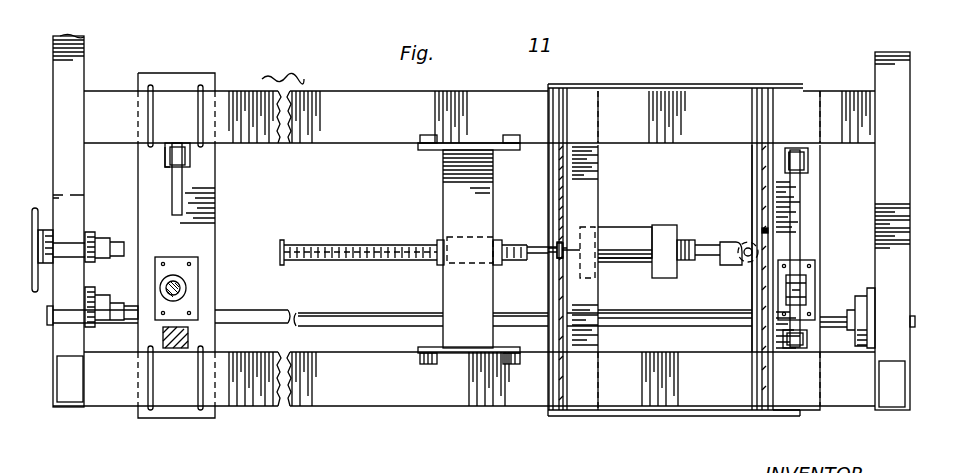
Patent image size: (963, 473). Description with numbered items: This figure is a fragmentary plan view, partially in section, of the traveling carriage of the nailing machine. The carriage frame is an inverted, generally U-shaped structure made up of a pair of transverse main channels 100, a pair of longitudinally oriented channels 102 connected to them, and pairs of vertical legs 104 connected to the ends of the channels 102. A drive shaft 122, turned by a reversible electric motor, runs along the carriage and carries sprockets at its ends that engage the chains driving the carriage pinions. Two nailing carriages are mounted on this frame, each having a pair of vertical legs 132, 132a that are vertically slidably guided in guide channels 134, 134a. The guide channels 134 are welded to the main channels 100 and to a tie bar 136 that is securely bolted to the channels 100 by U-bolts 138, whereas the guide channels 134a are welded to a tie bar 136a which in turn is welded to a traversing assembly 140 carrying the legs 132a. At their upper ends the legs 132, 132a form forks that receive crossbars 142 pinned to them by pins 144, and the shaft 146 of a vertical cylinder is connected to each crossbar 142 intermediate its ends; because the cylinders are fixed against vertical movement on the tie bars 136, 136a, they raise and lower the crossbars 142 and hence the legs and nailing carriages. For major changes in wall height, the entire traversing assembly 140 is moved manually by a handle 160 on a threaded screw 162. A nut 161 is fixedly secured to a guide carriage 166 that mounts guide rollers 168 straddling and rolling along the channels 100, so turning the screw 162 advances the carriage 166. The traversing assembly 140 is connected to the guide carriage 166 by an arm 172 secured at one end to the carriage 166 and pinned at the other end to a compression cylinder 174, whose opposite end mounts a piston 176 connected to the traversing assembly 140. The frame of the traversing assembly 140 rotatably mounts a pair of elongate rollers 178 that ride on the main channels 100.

The transverse main channels 100 is at (365, 107).
The longitudinally oriented channels 102 is at (74, 77).
The vertical legs 104 is at (72, 390).
The drive shaft 122 is at (388, 320).
The vertical legs 132 is at (190, 160).
The vertical legs 132a is at (805, 167).
The guide channels 134 is at (164, 166).
The guide channels 134a is at (808, 153).
The tie bar 136 is at (217, 222).
The tie bar 136a is at (815, 202).
The U-bolts 138 is at (188, 102).
The traversing assembly 140 is at (707, 75).
The crossbars 142 is at (182, 193).
The pins 144 is at (807, 340).
The shaft 146 is at (186, 283).
The handle 160 is at (46, 267).
The nut 161 is at (498, 240).
The threaded screw 162 is at (390, 243).
The guide carriage 166 is at (443, 180).
The guide rollers 168 is at (514, 135).
The arm 172 is at (537, 257).
The compression cylinder 174 is at (628, 245).
The piston 176 is at (708, 253).
The elongate rollers 178 is at (562, 411).